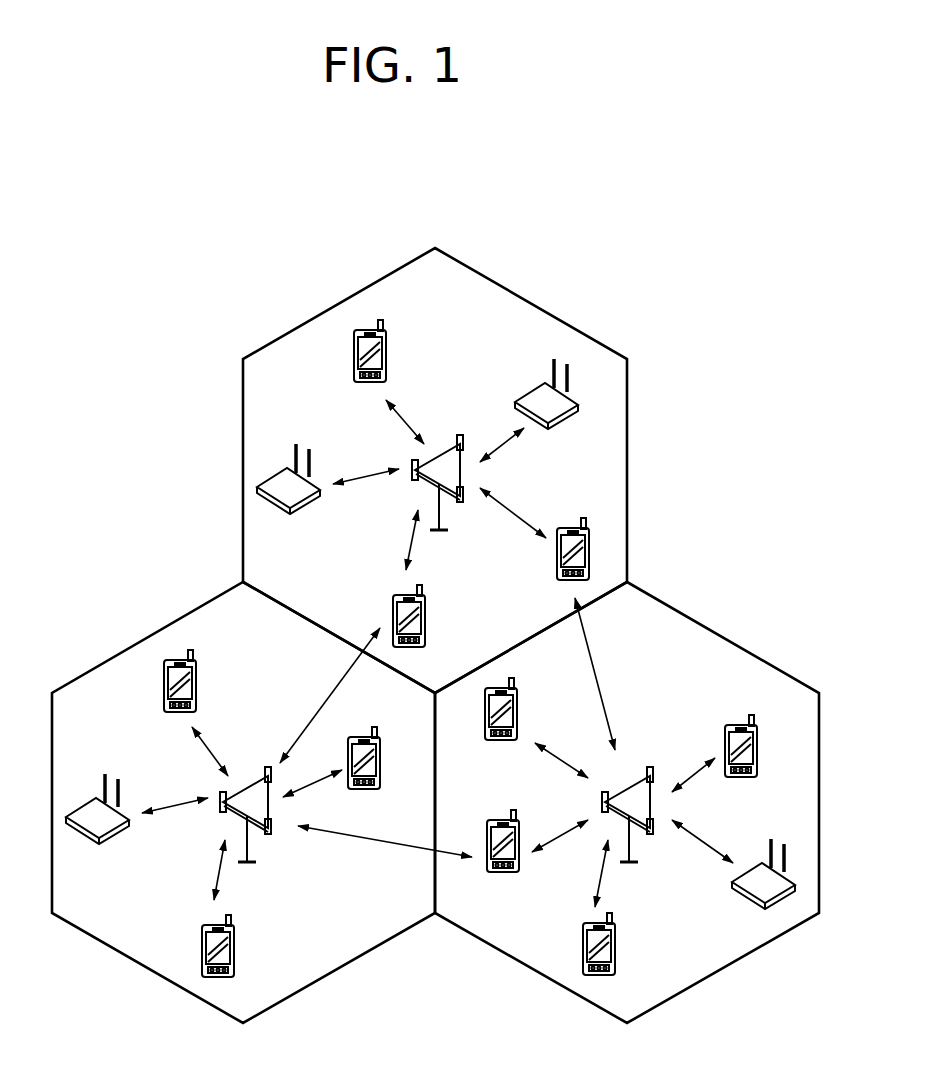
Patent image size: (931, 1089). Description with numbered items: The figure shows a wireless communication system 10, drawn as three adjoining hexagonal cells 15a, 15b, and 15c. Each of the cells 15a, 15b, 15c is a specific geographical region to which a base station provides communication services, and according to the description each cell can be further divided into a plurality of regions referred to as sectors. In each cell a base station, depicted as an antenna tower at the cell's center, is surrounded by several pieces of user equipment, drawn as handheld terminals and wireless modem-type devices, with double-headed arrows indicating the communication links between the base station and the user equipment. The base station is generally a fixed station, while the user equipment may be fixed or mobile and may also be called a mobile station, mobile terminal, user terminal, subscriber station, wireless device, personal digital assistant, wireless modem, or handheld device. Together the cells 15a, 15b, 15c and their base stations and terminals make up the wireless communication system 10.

The wireless communication system 10 is at (708, 366).
The cell 15a is at (628, 456).
The cell 15b is at (744, 649).
The cell 15c is at (125, 650).